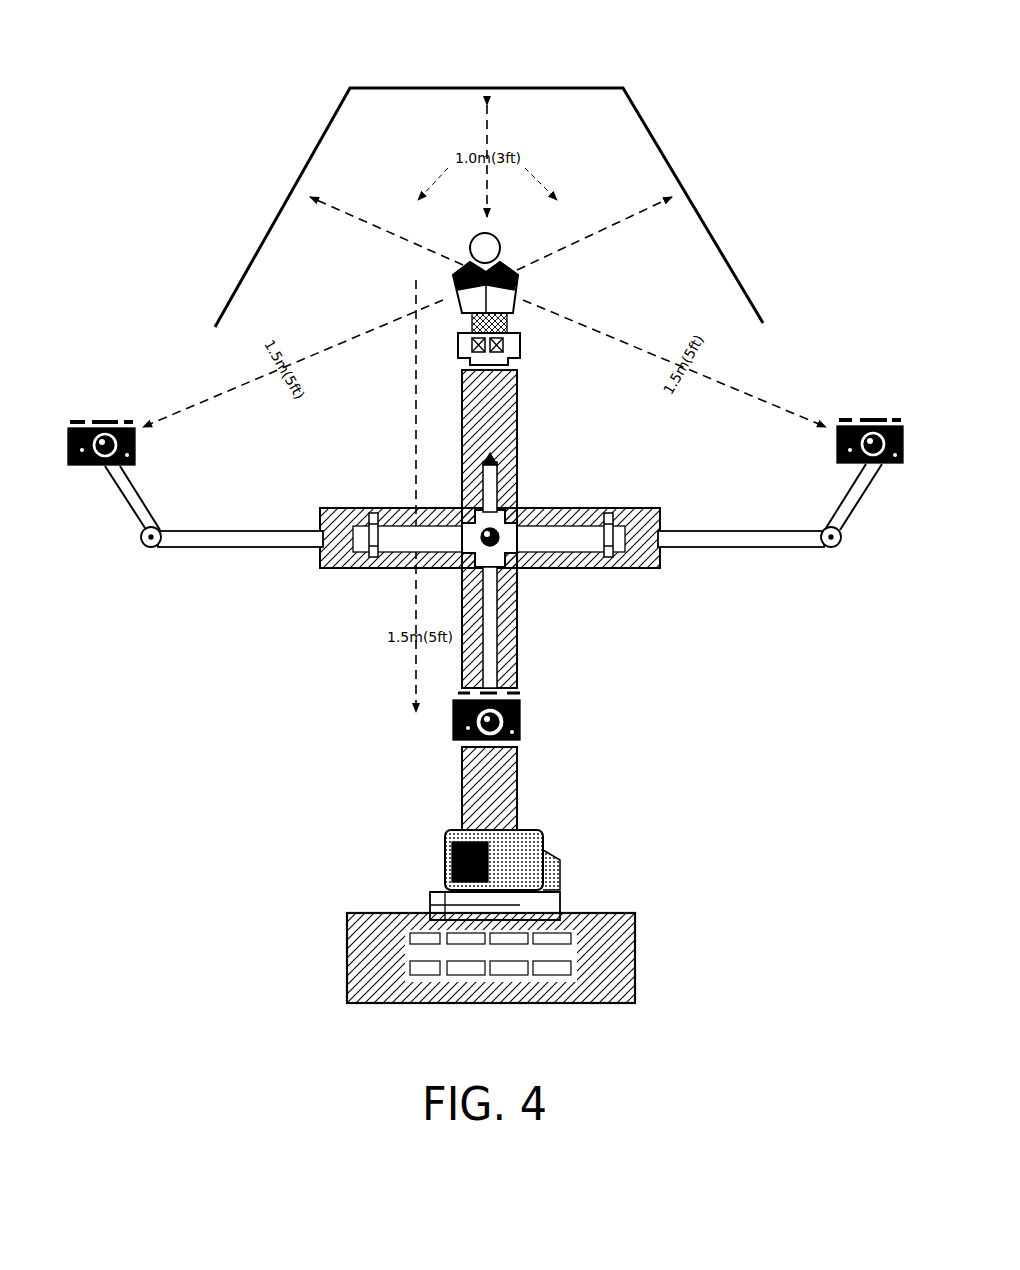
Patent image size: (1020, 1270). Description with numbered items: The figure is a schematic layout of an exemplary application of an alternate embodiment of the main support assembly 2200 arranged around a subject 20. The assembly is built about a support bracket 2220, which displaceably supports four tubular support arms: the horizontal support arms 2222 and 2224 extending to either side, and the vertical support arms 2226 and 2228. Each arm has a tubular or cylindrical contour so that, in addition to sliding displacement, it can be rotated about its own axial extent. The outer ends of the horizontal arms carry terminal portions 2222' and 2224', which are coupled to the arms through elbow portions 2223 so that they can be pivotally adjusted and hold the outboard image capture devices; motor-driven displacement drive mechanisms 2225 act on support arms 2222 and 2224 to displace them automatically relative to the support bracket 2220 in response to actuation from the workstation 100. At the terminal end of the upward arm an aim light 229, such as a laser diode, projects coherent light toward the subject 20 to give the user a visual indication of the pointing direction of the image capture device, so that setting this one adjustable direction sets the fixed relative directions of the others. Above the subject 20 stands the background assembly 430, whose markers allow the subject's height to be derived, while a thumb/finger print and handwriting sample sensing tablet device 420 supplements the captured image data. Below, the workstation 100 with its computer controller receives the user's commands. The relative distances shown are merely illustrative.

The background assembly 430 is at (528, 88).
The subject 20 is at (500, 245).
The thumb/finger print and handwriting sample sensing tablet device 420 is at (520, 345).
The aim light 229 is at (496, 458).
The support arm 2228 is at (505, 483).
The motor-driven displacement drive mechanism 2225 is at (373, 553).
The terminal portion 2224' is at (819, 475).
The support arm 2224 is at (741, 567).
The elbow portion 2223 is at (141, 550).
The terminal portion 2222' is at (106, 493).
The support arm 2222 is at (240, 565).
The support bracket 2220 is at (510, 637).
The support arm 2226 is at (487, 673).
The main support assembly 2200 is at (613, 735).
The workstation 100 is at (575, 880).